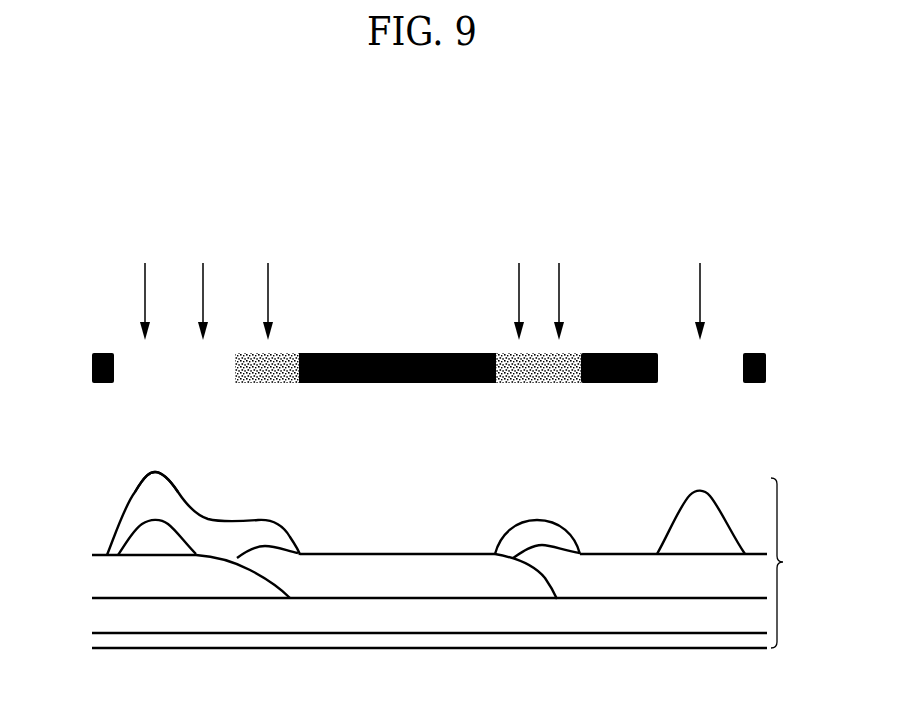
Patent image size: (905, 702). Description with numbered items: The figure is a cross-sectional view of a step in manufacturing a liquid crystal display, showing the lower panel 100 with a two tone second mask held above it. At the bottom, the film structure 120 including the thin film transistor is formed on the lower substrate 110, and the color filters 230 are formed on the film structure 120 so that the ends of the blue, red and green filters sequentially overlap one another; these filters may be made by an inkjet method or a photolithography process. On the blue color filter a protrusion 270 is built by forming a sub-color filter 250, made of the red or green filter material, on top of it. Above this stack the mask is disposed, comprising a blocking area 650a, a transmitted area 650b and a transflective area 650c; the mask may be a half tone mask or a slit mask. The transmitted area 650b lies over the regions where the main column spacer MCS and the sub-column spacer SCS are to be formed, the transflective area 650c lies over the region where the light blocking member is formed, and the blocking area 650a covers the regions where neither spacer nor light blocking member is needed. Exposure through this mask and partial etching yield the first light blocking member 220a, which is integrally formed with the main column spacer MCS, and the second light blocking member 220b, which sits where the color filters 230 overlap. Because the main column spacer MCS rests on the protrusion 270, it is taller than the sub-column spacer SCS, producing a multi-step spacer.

The blocking area 650a is at (102, 353).
The transmitted area 650b is at (207, 376).
The transflective area 650c is at (280, 361).
The sub-color filter 250 is at (137, 545).
The protrusion 270 is at (178, 523).
The first light blocking member 220a is at (263, 528).
The second light blocking member 220b is at (537, 525).
The color filters 230 is at (105, 578).
The film structure 120 is at (105, 612).
The lower substrate 110 is at (105, 643).
The lower panel 100 is at (796, 563).
The main column spacer MCS is at (155, 478).
The sub-column spacer SCS is at (697, 497).